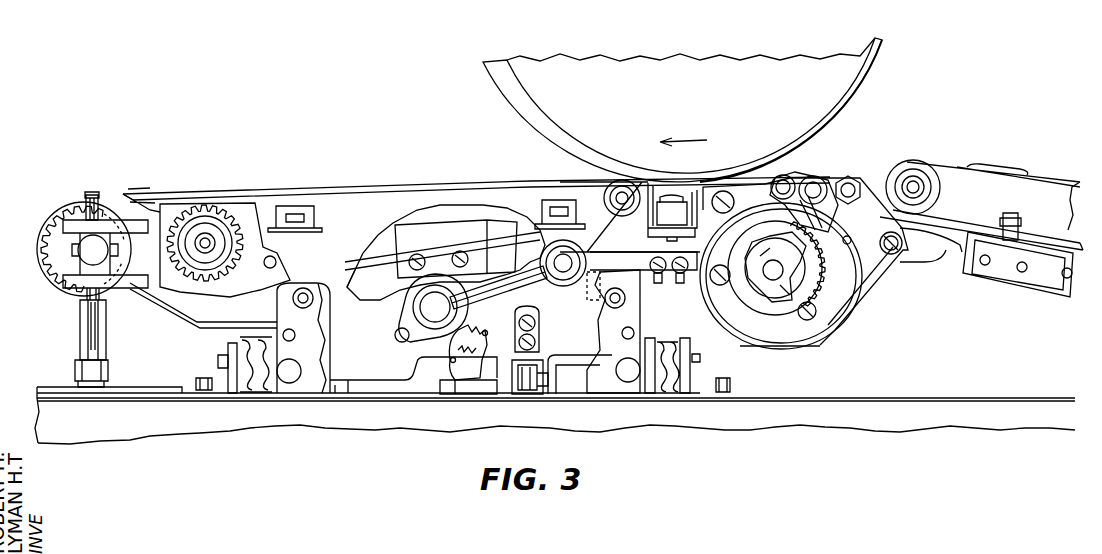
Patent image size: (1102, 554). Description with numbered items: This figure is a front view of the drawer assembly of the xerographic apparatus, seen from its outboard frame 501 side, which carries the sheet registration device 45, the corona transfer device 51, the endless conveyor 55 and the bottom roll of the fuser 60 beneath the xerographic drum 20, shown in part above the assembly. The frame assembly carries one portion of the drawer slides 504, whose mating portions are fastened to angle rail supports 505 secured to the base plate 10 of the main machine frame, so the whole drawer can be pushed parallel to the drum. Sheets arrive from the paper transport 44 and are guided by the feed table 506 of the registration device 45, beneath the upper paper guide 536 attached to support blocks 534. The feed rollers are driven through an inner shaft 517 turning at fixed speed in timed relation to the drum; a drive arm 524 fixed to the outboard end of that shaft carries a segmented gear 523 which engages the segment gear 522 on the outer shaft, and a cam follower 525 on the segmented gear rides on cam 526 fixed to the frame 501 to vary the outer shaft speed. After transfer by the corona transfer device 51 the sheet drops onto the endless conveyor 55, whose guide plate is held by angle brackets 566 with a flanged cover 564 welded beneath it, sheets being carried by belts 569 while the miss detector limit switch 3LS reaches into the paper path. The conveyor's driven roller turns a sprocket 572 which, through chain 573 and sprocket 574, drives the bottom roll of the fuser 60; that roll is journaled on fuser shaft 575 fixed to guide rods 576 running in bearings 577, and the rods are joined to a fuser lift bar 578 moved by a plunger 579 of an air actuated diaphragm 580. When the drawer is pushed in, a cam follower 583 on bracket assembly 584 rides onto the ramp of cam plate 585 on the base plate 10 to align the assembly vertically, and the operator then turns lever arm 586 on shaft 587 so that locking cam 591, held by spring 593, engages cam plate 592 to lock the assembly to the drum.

The base plate 10 is at (880, 386).
The drum 20 is at (876, 64).
The paper transport 44 is at (1042, 164).
The sheet registration device 45 is at (864, 152).
The corona transfer device 51 is at (676, 203).
The endless conveyor 55 is at (361, 173).
The fuser 60 is at (130, 178).
The outboard frame 501 is at (866, 305).
The drawer slides 504 is at (240, 343).
The angle rail supports 505 is at (210, 378).
The feed table 506 is at (945, 258).
The inner shaft 517 is at (735, 293).
The segment gear 522 is at (848, 322).
The segmented gear 523 is at (778, 222).
The drive arm 524 is at (800, 292).
The cam follower 525 is at (740, 192).
The cam 526 is at (868, 278).
The support blocks 534 is at (838, 160).
The upper paper guide 536 is at (856, 185).
The flanged cover 564 is at (468, 222).
The angle brackets 566 is at (314, 213).
The belts 569 is at (498, 182).
The sprocket 572 is at (218, 210).
The chain 573 is at (165, 192).
The sprocket 574 is at (55, 250).
The fuser shaft 575 is at (108, 247).
The guide rods 576 is at (86, 310).
The bearings 577 is at (108, 262).
The fuser lift bar 578 is at (106, 330).
The plunger 579 is at (108, 366).
The air actuated diaphragm 580 is at (154, 387).
The cam follower 583 is at (530, 394).
The bracket assembly 584 is at (560, 357).
The cam plate 585 is at (510, 393).
The lever arm 586 is at (478, 293).
The shaft 587 is at (432, 307).
The locking cam 591 is at (420, 368).
The cam plate 592 is at (492, 373).
The spring 593 is at (472, 343).
The miss detector limit switch 3LS is at (558, 275).